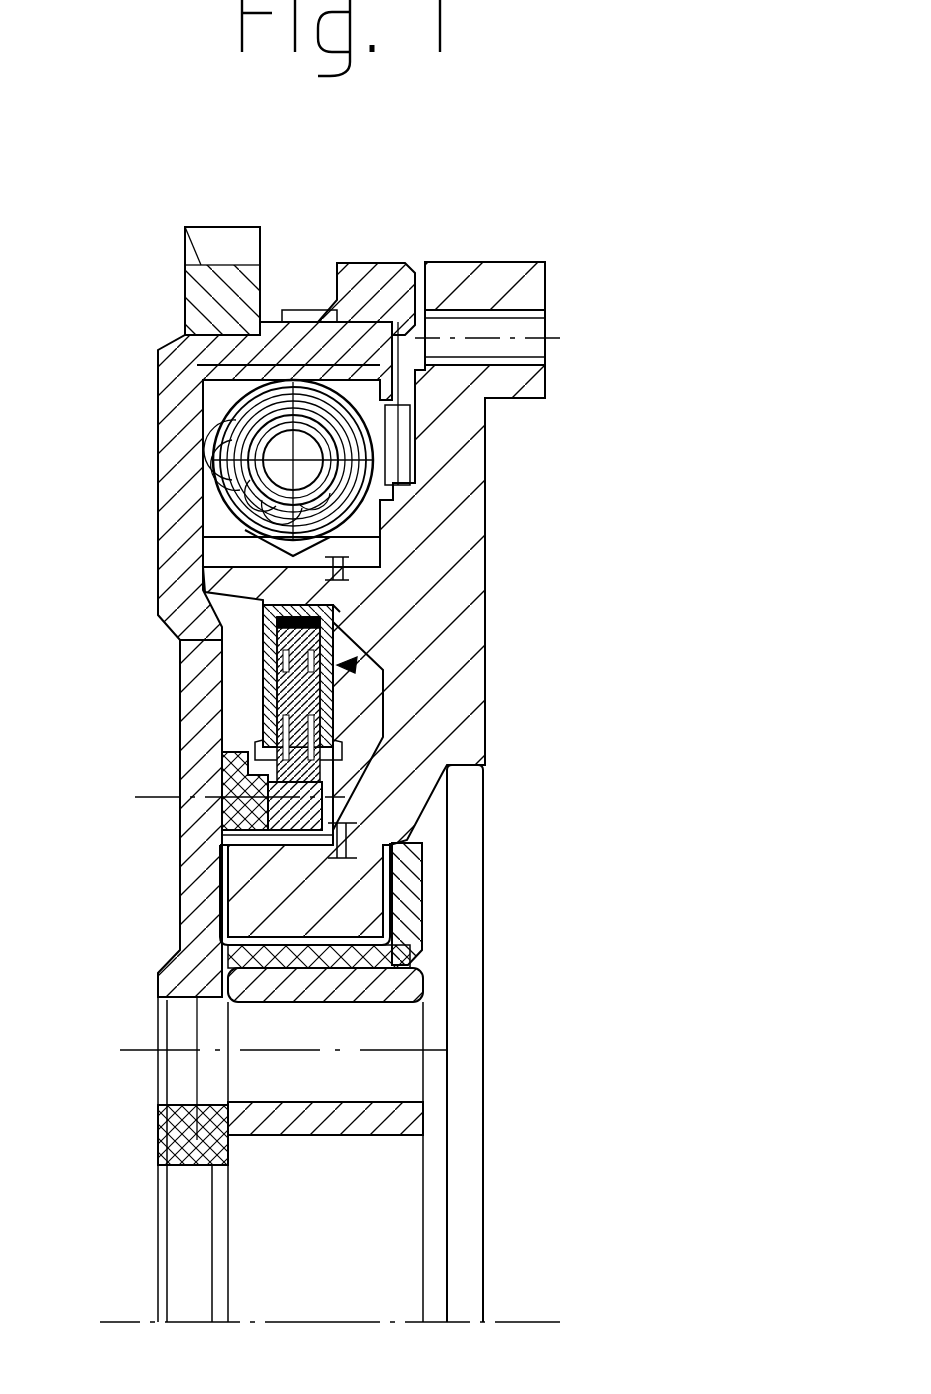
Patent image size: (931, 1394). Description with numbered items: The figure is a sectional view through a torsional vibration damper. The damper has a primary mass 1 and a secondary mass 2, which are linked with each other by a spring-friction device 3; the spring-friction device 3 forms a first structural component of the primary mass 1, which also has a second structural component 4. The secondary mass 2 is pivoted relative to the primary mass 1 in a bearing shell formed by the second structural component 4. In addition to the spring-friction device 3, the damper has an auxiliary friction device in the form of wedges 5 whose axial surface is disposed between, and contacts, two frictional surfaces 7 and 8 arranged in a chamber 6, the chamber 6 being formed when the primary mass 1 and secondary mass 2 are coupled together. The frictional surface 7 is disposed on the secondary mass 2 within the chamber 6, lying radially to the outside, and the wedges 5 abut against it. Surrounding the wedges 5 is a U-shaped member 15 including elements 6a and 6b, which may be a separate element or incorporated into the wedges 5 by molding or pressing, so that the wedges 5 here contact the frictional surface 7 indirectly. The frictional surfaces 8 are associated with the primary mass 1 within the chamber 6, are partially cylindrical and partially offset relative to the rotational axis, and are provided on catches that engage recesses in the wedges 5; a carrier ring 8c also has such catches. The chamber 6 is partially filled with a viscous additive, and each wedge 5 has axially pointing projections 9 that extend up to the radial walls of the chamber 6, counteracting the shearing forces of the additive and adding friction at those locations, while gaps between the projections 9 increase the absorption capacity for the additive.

The primary mass 1 is at (197, 690).
The secondary mass 2 is at (455, 518).
The spring-friction device 3 is at (318, 430).
The second structural component 4 is at (218, 963).
The wedges 5 is at (340, 687).
The chamber 6 is at (343, 730).
The element of U-shaped member 6a is at (257, 732).
The element of U-shaped member 6b is at (343, 760).
The frictional surface 7 is at (240, 637).
The frictional surfaces 8 is at (300, 850).
The carrier ring 8c is at (260, 825).
The projections 9 is at (337, 622).
The U-shaped member 15 is at (350, 664).